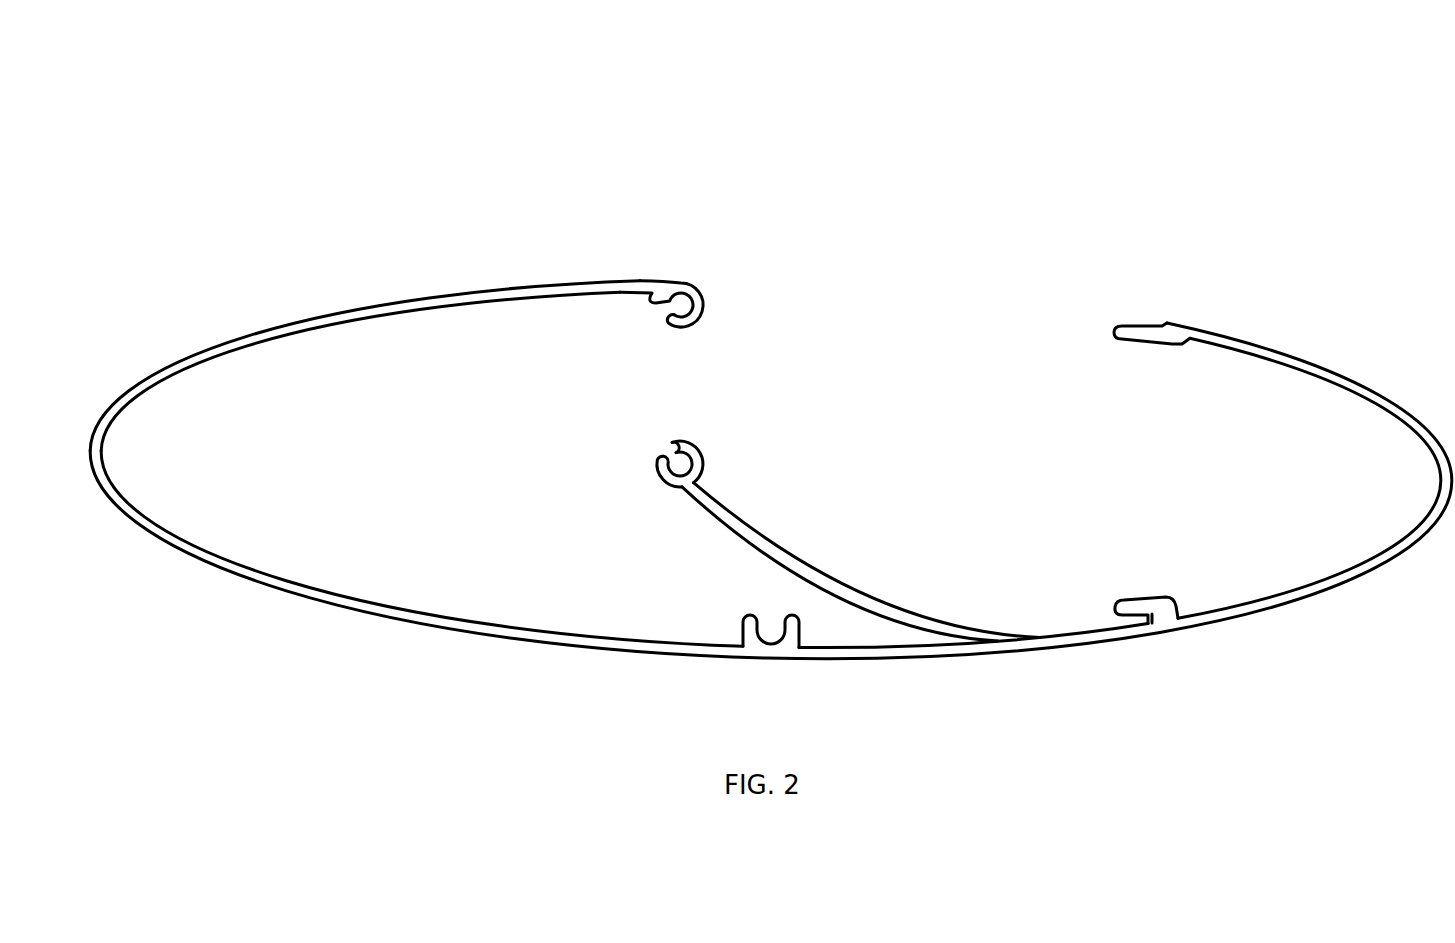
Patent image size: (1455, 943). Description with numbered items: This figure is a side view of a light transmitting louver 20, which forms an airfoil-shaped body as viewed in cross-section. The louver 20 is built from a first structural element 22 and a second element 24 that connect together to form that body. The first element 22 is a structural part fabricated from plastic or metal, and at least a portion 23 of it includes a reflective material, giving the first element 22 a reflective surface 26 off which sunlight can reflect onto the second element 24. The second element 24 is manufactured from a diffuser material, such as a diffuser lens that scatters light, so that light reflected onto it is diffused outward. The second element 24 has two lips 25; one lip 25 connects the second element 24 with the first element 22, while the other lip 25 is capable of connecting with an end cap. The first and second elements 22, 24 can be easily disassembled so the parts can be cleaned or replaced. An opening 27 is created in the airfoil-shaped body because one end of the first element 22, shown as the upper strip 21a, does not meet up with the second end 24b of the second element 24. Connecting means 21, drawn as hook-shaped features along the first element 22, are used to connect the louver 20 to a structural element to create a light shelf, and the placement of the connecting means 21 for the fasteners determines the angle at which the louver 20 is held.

The light transmitting louver 20 is at (243, 160).
The connecting means 21 is at (763, 613).
The upper rim portion 21a is at (630, 282).
The first structural element 22 is at (240, 578).
The portion of the first element 23 is at (865, 612).
The second element 24 is at (1295, 352).
The second end of the second element 24b is at (1183, 328).
The lip 25 is at (1140, 598).
The reflective surface 26 is at (805, 570).
The opening 27 is at (1150, 320).